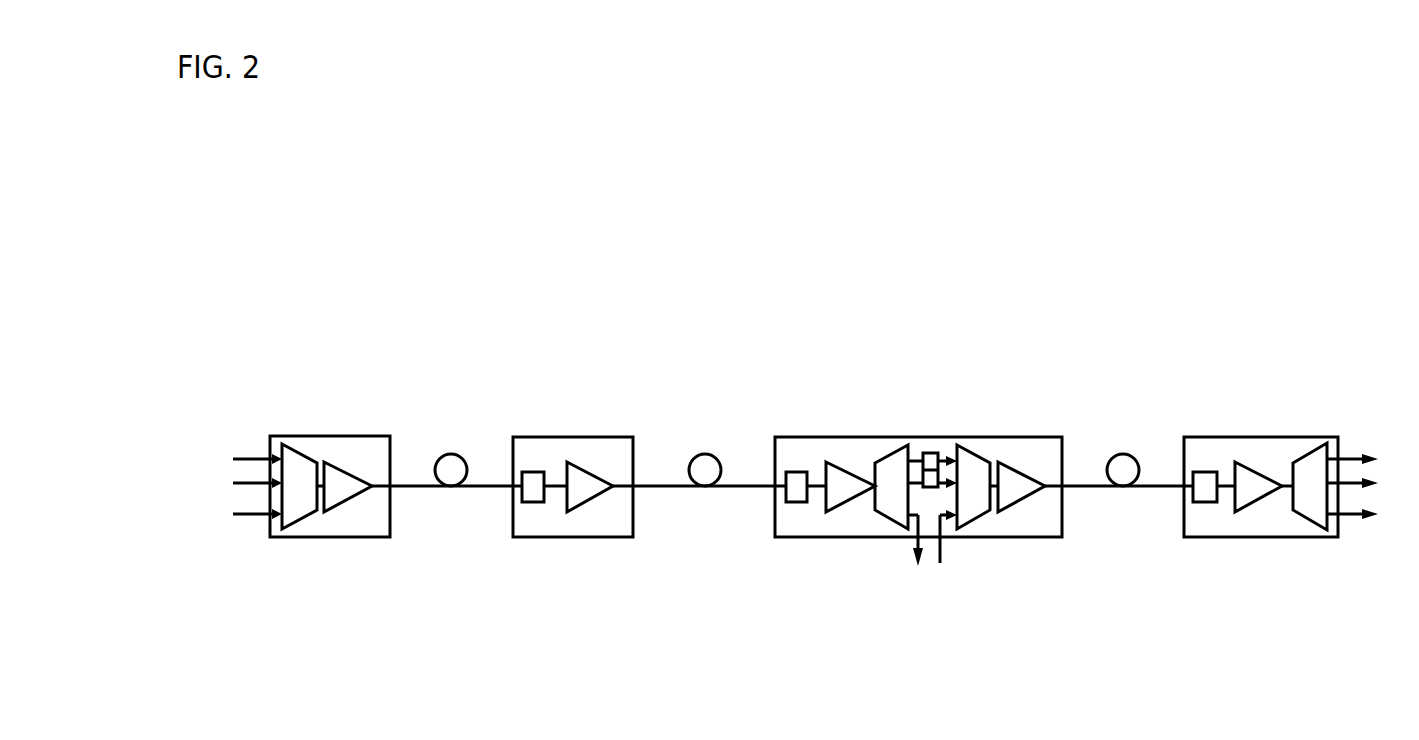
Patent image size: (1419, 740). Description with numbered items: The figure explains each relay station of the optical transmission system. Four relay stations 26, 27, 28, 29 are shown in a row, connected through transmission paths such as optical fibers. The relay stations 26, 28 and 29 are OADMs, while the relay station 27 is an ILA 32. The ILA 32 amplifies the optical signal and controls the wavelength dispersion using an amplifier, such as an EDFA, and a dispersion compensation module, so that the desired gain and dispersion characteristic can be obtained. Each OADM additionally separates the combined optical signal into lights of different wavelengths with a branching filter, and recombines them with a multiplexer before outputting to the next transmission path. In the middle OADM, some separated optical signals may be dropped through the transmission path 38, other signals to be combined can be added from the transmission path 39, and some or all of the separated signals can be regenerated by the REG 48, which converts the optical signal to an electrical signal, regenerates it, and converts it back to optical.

The relay station 26 is at (323, 457).
The relay station 27 is at (579, 442).
The relay station 28 is at (943, 457).
The relay station 29 is at (1282, 418).
The ILA 32 is at (625, 435).
The transmission path 38 is at (915, 550).
The transmission path 39 is at (940, 552).
The REG 48 is at (932, 452).